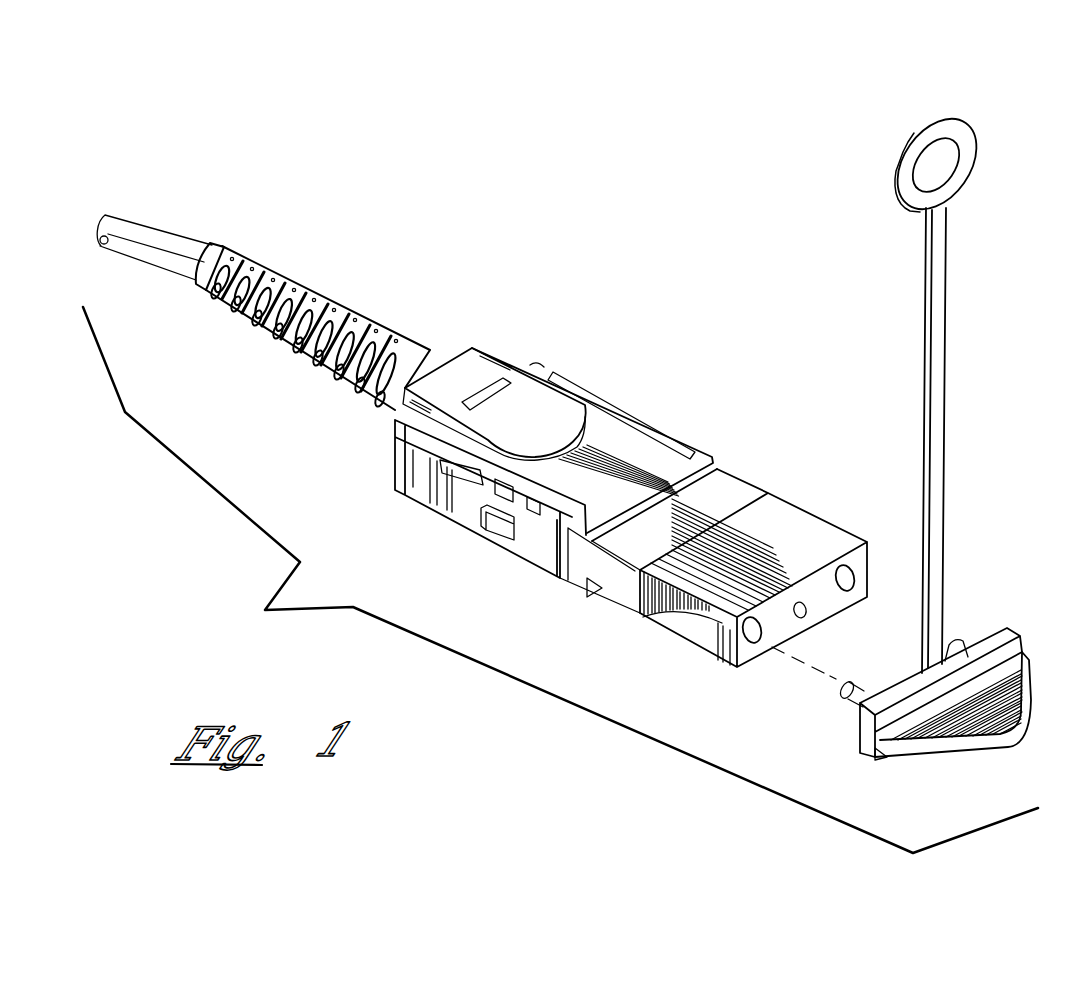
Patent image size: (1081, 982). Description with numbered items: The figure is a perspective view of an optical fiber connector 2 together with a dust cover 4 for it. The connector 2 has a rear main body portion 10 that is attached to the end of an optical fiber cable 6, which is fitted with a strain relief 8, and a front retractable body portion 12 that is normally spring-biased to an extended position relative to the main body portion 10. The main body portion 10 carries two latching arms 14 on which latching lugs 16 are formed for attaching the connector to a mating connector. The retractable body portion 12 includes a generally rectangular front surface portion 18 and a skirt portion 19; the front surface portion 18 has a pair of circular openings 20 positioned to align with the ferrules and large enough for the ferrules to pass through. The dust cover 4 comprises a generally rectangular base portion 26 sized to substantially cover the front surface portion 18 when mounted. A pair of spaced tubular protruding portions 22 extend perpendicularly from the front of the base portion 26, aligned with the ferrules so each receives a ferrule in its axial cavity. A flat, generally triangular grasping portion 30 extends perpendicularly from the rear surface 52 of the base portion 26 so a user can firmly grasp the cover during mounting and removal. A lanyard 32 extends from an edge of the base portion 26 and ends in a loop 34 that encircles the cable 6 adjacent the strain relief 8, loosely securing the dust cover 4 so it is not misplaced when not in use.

The optical fiber connector 2 is at (506, 242).
The dust cover 4 is at (985, 473).
The optical fiber cable 6 is at (146, 238).
The strain relief 8 is at (314, 306).
The rear main body portion 10 is at (601, 426).
The retractable body portion 12 is at (784, 524).
The latching arms 14 is at (665, 426).
The latching lugs 16 is at (484, 527).
The front surface portion 18 is at (823, 613).
The skirt portion 19 is at (657, 615).
The circular openings 20 is at (753, 640).
The protruding portions 22 is at (953, 636).
The base portion 26 is at (993, 630).
The grasping portion 30 is at (1024, 702).
The lanyard 32 is at (953, 316).
The loop 34 is at (978, 136).
The rear surface 52 is at (875, 760).